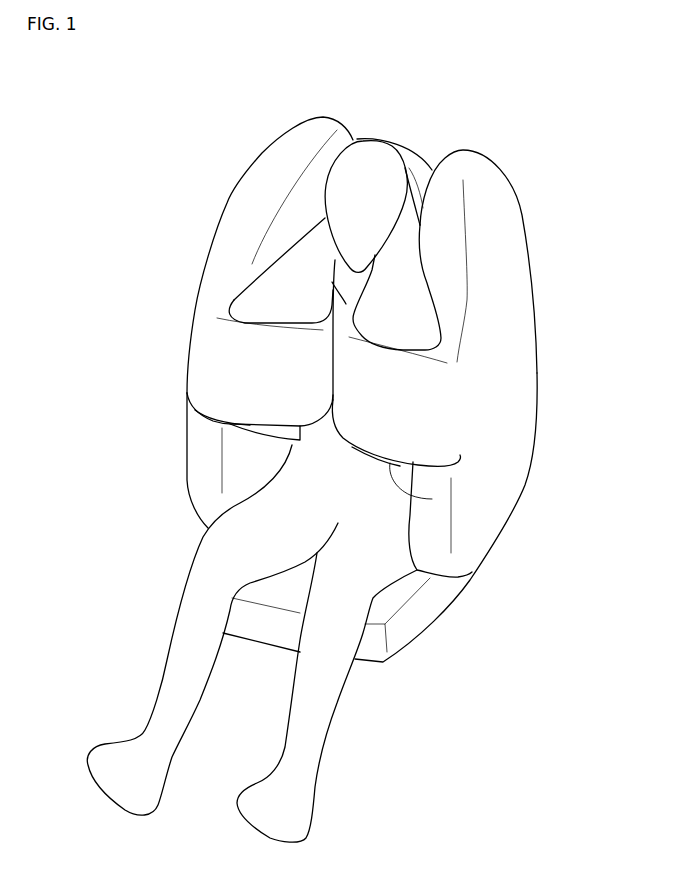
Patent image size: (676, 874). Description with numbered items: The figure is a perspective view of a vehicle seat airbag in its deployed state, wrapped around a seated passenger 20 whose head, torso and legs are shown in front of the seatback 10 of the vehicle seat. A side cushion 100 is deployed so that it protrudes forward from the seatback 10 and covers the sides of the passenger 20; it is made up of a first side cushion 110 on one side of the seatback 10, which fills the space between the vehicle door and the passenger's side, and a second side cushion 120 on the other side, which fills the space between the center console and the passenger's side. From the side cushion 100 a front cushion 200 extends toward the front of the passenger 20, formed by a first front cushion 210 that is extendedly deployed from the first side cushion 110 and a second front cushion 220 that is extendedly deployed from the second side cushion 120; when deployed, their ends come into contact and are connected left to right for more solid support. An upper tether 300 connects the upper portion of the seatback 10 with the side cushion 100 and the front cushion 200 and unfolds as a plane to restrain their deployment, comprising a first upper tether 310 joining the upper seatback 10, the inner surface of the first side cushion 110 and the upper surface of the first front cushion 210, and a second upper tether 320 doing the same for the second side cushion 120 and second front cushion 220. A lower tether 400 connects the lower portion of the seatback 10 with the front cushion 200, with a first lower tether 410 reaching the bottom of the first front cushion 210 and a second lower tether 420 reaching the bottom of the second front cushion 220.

The seatback 10 is at (412, 158).
The passenger 20 is at (377, 158).
The side cushion 100 is at (514, 316).
The first side cushion 110 is at (520, 362).
The second side cushion 120 is at (280, 153).
The front cushion 200 is at (220, 363).
The first front cushion 210 is at (417, 392).
The second front cushion 220 is at (227, 392).
The upper tether 300 is at (272, 287).
The first upper tether 310 is at (404, 273).
The second upper tether 320 is at (304, 248).
The lower tether 400 is at (350, 460).
The first lower tether 410 is at (432, 499).
The second lower tether 420 is at (262, 433).